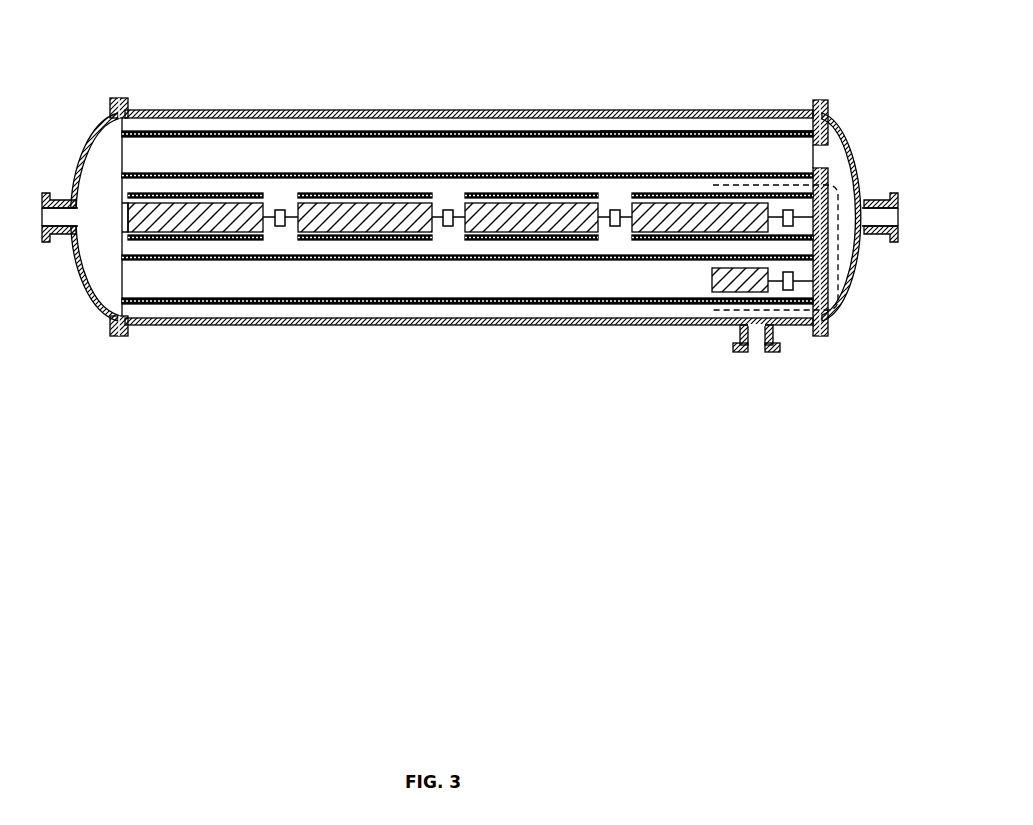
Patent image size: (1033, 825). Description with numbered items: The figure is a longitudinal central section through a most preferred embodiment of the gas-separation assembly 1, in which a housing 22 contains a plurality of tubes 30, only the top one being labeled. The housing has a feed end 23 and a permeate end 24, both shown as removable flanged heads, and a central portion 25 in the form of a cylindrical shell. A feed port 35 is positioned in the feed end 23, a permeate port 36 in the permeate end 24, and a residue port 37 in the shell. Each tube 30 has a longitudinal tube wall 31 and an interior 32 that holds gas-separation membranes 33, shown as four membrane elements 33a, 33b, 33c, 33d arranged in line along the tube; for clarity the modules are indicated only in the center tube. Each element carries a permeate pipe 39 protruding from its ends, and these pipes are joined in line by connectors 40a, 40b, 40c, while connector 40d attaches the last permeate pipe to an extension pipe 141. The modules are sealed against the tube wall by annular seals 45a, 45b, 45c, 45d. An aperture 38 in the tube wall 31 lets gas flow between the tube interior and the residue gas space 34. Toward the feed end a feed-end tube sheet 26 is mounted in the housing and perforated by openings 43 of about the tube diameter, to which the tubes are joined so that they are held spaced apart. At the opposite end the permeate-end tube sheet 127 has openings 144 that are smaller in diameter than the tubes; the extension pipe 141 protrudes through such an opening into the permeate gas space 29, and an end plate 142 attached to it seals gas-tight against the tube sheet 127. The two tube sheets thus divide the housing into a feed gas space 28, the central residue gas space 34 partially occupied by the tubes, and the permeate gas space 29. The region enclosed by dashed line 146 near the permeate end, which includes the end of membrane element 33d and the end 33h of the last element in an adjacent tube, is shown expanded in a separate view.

The assembly 1 is at (690, 0).
The housing 22 is at (469, 209).
The feed end 23 is at (80, 158).
The permeate end 24 is at (843, 175).
The central portion 25 is at (514, 110).
The feed-end tube sheet 26 is at (116, 306).
The feed gas space 28 is at (112, 138).
The permeate gas space 29 is at (841, 175).
The tube 30 is at (400, 134).
The tube wall 31 is at (642, 134).
The interior 32 is at (706, 150).
The gas-separation membranes 33 is at (186, 220).
The membrane element 33a is at (224, 206).
The membrane element 33b is at (390, 206).
The membrane element 33c is at (558, 206).
The membrane element 33d is at (694, 206).
The membrane element 33h is at (720, 286).
The residue gas space 34 is at (425, 325).
The feed port 35 is at (48, 213).
The permeate port 36 is at (895, 228).
The residue port 37 is at (757, 352).
The aperture 38 is at (780, 312).
The permeate pipe 39 is at (600, 262).
The connector 40a is at (280, 228).
The connector 40b is at (448, 228).
The connector 40c is at (615, 228).
The connector 40d is at (790, 228).
The opening 43 is at (122, 218).
The annular seal 45a is at (148, 198).
The annular seal 45b is at (312, 198).
The annular seal 45c is at (480, 198).
The annular seal 45d is at (650, 198).
The permeate-end tube sheet 127 is at (832, 298).
The extension pipe 141 is at (832, 215).
The end plate 142 is at (835, 290).
The opening 144 is at (814, 152).
The dashed line 146 is at (700, 265).